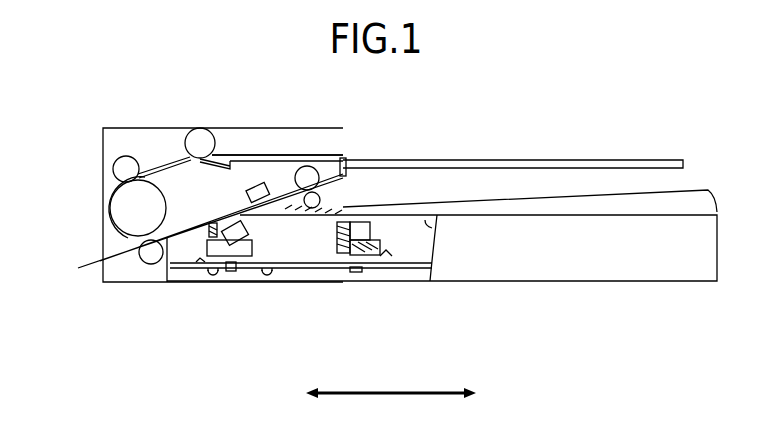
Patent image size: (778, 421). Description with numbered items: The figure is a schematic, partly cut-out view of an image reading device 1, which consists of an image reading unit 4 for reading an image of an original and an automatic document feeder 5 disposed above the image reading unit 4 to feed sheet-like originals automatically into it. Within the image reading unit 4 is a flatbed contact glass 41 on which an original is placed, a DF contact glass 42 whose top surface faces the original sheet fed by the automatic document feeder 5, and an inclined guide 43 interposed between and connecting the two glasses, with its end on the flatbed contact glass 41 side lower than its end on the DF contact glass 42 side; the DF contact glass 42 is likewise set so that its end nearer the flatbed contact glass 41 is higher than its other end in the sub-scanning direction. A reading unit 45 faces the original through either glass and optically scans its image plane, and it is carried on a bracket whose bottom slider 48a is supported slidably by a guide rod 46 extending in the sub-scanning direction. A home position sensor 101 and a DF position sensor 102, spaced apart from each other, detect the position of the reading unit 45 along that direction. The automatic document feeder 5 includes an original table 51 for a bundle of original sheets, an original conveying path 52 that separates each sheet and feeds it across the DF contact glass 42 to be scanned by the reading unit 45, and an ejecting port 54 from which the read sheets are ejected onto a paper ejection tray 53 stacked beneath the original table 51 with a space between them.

The image reading device 1 is at (88, 230).
The image reading unit 4 is at (716, 246).
The automatic document feeder 5 is at (152, 150).
The flatbed contact glass 41 is at (425, 222).
The DF contact glass 42 is at (213, 233).
The inclined guide 43 is at (283, 212).
The reading unit 45 is at (205, 247).
The guide rod 46 is at (428, 250).
The bottom slider 48a is at (229, 271).
The original table 51 is at (584, 158).
The original conveying path 52 is at (262, 157).
The paper ejection tray 53 is at (708, 190).
The ejecting port 54 is at (347, 176).
The home position sensor 101 is at (270, 276).
The DF position sensor 102 is at (215, 275).